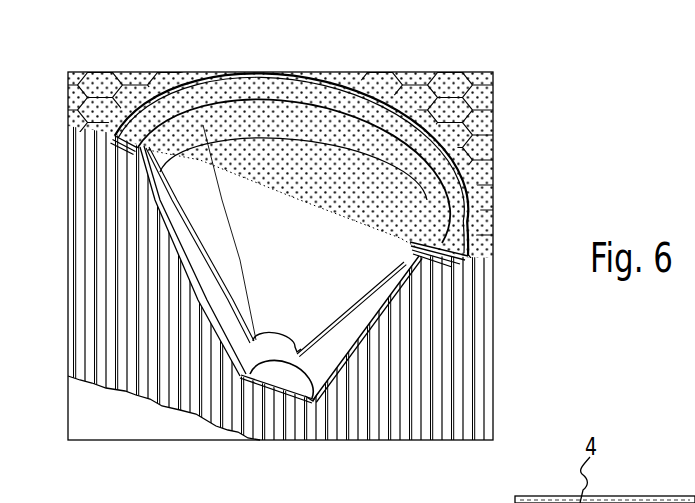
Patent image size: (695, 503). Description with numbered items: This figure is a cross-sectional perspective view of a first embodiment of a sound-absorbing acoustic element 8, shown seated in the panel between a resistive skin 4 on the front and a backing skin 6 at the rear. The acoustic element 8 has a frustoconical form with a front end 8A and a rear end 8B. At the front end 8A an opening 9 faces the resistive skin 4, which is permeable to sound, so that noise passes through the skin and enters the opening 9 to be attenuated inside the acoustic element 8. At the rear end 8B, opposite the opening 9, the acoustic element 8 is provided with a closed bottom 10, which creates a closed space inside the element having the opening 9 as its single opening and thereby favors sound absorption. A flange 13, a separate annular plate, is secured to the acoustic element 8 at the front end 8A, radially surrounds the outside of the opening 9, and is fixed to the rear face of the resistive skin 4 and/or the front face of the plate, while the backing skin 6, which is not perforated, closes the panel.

The resistive skin 4 is at (484, 118).
The backing skin 6 is at (80, 410).
The acoustic element 8 is at (405, 297).
The front end of the acoustic element 8A is at (422, 257).
The rear end of the acoustic element 8B is at (326, 399).
The opening 9 is at (258, 131).
The closed bottom 10 is at (264, 387).
The flange 13 is at (114, 137).